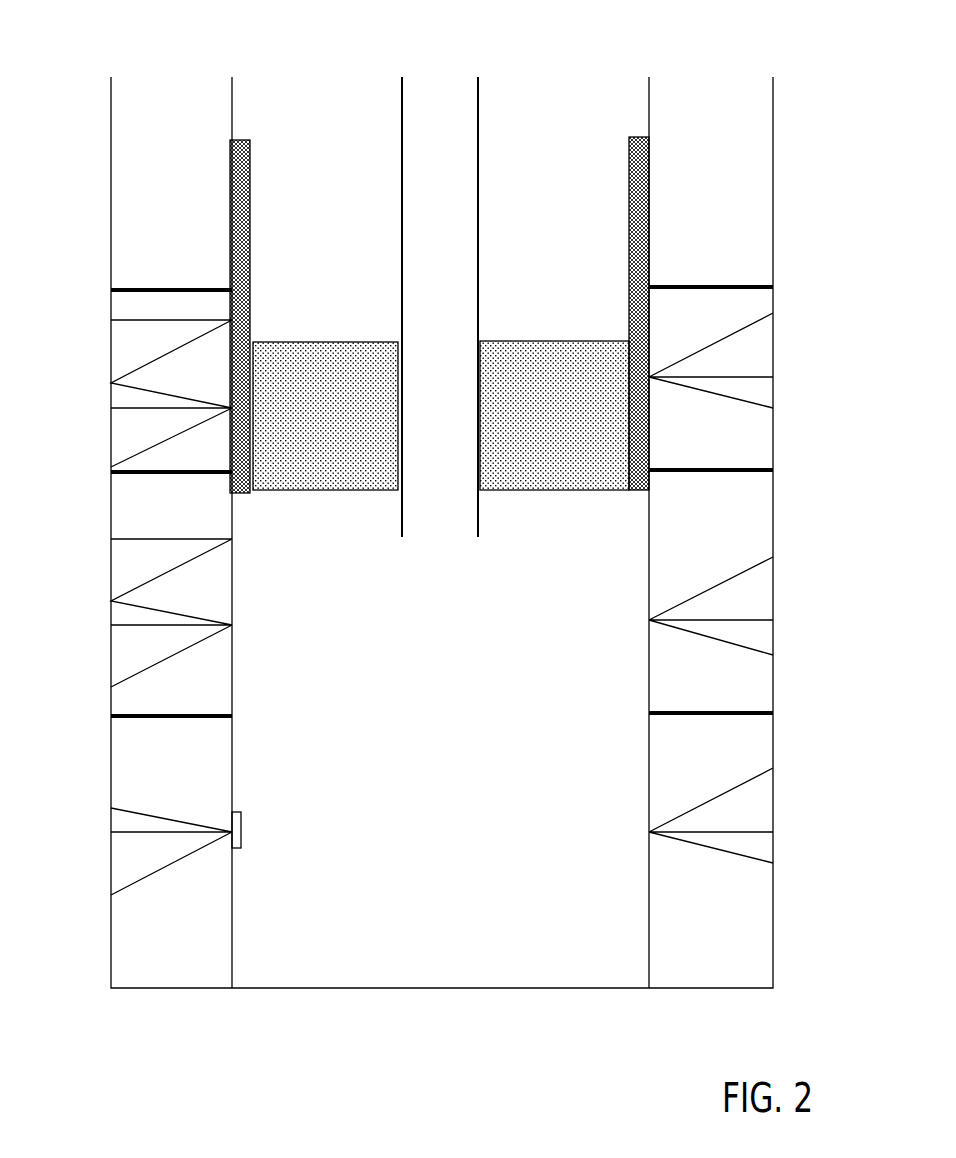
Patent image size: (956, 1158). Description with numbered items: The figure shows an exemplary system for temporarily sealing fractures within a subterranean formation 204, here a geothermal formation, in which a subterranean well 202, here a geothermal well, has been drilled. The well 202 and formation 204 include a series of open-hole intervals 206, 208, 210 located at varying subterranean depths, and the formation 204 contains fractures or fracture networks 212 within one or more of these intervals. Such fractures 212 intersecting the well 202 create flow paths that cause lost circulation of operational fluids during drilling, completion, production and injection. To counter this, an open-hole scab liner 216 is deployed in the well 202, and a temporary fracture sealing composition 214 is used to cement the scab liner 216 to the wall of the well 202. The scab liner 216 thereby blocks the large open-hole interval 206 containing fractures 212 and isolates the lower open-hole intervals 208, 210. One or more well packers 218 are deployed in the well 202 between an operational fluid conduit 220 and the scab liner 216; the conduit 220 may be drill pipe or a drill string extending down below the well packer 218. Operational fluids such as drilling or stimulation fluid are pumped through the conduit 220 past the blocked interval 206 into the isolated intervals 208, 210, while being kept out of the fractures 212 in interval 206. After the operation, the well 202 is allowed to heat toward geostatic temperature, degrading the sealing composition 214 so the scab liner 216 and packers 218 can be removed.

The subterranean well 202 is at (285, 65).
The subterranean formation 204 is at (90, 168).
The open-hole interval 206 is at (112, 365).
The open-hole interval 208 is at (112, 503).
The open-hole interval 210 is at (112, 738).
The fractures 212 is at (137, 410).
The temporary fracture sealing composition 214 is at (243, 138).
The open-hole scab liner 216 is at (272, 230).
The well packer 218 is at (335, 492).
The operational fluid conduit 220 is at (480, 90).